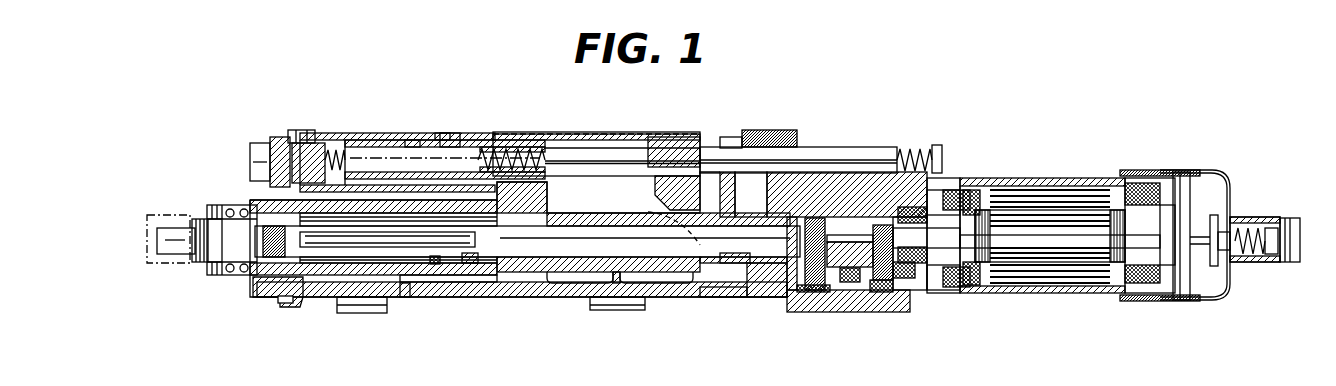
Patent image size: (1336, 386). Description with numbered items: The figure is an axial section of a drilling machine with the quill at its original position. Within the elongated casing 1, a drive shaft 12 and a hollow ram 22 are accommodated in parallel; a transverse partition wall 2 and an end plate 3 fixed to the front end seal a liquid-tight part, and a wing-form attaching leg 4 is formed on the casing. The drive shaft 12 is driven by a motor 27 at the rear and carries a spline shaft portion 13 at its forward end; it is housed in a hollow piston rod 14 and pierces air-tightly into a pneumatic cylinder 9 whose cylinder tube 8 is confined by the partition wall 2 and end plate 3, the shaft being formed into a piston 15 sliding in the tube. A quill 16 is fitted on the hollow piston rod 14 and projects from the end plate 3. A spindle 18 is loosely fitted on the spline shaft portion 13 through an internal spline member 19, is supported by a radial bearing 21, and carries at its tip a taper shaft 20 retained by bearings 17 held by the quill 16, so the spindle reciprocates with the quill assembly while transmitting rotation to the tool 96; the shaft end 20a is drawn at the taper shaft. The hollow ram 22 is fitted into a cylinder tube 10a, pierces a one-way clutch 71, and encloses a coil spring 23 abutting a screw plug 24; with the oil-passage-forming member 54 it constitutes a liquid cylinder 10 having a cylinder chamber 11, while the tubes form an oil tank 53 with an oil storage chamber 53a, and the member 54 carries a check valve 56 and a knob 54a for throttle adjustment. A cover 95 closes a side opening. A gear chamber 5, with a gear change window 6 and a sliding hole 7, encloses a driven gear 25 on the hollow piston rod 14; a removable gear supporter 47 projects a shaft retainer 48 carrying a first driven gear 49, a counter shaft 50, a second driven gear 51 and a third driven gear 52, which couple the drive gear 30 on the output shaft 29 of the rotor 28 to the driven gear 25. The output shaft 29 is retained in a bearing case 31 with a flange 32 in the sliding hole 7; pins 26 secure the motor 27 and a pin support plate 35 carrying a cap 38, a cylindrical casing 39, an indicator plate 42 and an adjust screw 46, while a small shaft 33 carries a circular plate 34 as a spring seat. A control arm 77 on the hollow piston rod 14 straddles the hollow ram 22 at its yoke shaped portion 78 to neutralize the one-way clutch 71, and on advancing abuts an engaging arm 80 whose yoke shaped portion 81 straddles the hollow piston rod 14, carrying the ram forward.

The casing 1 is at (543, 287).
The partition wall 2 is at (540, 200).
The end plate 3 is at (270, 287).
The attaching leg 4 is at (375, 313).
The gear chamber 5 is at (867, 217).
The gear change window 6 is at (793, 277).
The sliding hole 7 is at (933, 217).
The cylinder tube 8 is at (460, 284).
The pneumatic cylinder 9 is at (406, 306).
The liquid cylinder 10 is at (422, 143).
The cylinder tube 10a is at (443, 130).
The cylinder chamber 11 is at (413, 137).
The drive shaft 12 is at (655, 242).
The spline shaft portion 13 is at (368, 247).
The hollow piston rod 14 is at (589, 222).
The piston 15 is at (500, 277).
The quill 16 is at (343, 270).
The bearings 17 is at (230, 208).
The spindle 18 is at (308, 255).
The internal spline member 19 is at (470, 258).
The taper shaft 20 is at (210, 218).
The shaft end 20a is at (160, 262).
The radial bearing 21 is at (433, 262).
The hollow ram 22 is at (598, 155).
The coil spring 23 is at (407, 157).
The screw plug 24 is at (937, 150).
The driven gear 25 is at (817, 217).
The pins 26 is at (965, 182).
The motor 27 is at (1042, 200).
The rotor 28 is at (1115, 227).
The output shaft 29 is at (970, 278).
The drive gear 30 is at (887, 223).
The bearing case 31 is at (913, 263).
The flange 32 is at (933, 272).
The small shaft 33 is at (1198, 237).
The circular plate 34 is at (1214, 215).
The pin support plate 35 is at (1180, 193).
The cap 38 is at (1195, 301).
The cylindrical casing 39 is at (1263, 217).
The indicator plate 42 is at (1247, 256).
The adjust screw 46 is at (1282, 224).
The gear supporter 47 is at (832, 310).
The shaft retainer 48 is at (843, 237).
The first driven gear 49 is at (901, 278).
The counter shaft 50 is at (850, 282).
The second driven gear 51 is at (887, 292).
The third driven gear 52 is at (812, 292).
The oil tank 53 is at (449, 128).
The oil storage chamber 53a is at (450, 183).
The oil-passage-forming member 54 is at (283, 155).
The knob 54a is at (250, 152).
The check valve 56 is at (333, 147).
The one-way clutch 71 is at (757, 130).
The control arm 77 is at (735, 262).
The yoke shaped portion 78 is at (722, 140).
The engaging arm 80 is at (663, 140).
The yoke shaped portion 81 is at (660, 217).
The cover 95 is at (513, 133).
The tool 96 is at (137, 243).